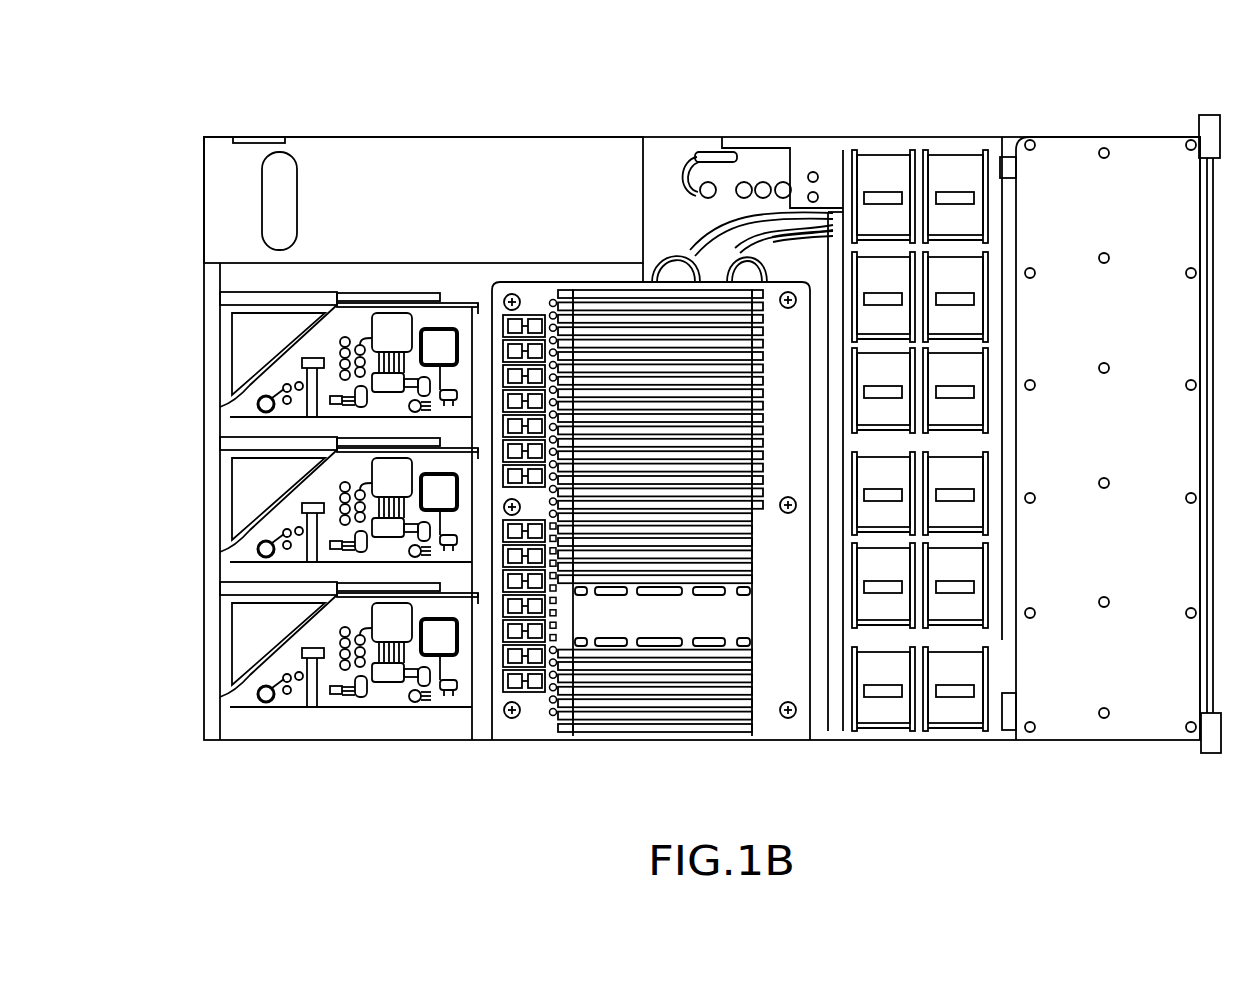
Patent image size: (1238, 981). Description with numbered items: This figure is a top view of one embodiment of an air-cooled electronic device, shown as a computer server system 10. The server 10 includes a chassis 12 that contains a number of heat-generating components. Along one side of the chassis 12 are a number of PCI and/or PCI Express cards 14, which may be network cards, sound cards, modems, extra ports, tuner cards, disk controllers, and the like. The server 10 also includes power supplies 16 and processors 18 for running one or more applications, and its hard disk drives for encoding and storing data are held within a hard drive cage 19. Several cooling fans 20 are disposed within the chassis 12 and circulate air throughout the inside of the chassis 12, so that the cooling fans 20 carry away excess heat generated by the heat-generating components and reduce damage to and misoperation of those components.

The computer server system 10 is at (274, 98).
The chassis 12 is at (538, 742).
The PCI and/or PCI Express cards 14 is at (300, 705).
The power supplies 16 is at (430, 150).
The processors 18 is at (730, 725).
The hard drive cage 19 is at (1156, 713).
The cooling fans 20 is at (945, 713).